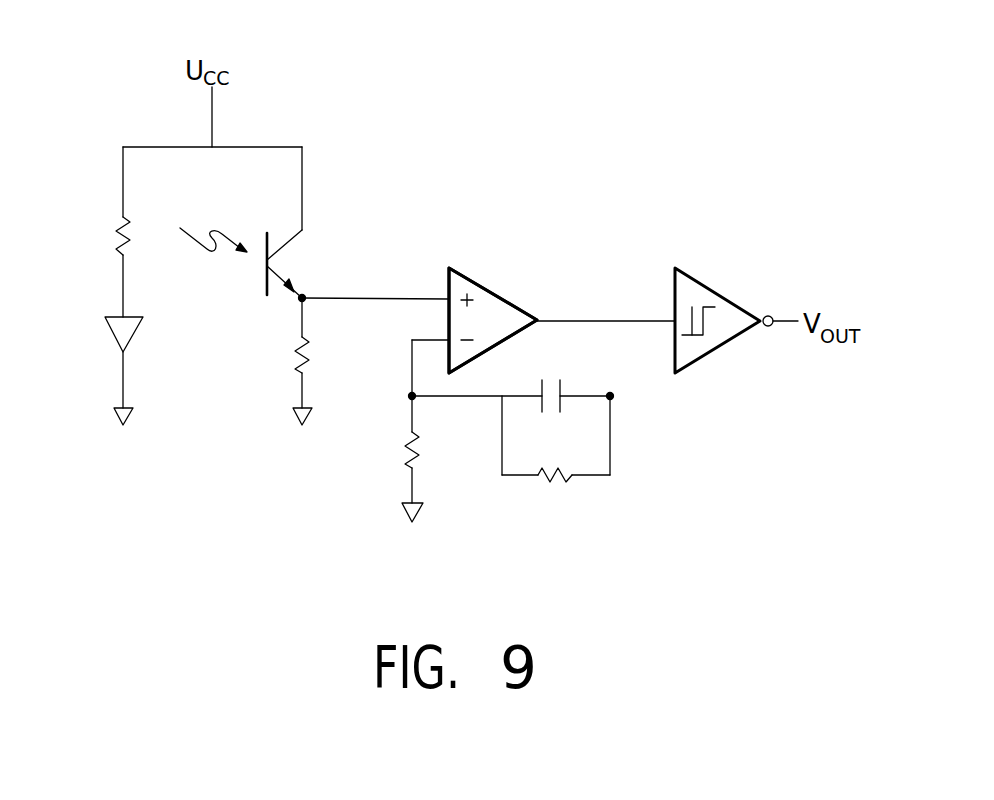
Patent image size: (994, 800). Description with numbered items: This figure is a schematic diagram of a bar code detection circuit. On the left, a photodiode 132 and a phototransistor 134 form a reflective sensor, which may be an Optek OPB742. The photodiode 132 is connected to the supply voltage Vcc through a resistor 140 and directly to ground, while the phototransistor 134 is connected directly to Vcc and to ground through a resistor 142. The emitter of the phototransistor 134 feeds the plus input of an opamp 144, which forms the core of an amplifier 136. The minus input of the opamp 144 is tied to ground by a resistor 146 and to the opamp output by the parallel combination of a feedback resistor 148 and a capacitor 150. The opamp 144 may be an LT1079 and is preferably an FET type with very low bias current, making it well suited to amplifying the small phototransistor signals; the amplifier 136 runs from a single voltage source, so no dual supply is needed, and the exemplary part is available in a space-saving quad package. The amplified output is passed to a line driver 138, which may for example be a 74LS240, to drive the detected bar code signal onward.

The photodiode 132 is at (135, 333).
The phototransistor 134 is at (267, 285).
The amplifier 136 is at (496, 249).
The line driver 138 is at (733, 249).
The resistor 140 is at (123, 192).
The resistor 142 is at (308, 352).
The opamp 144 is at (495, 288).
The resistor 146 is at (407, 452).
The resistor 148 is at (554, 480).
The capacitor 150 is at (582, 396).